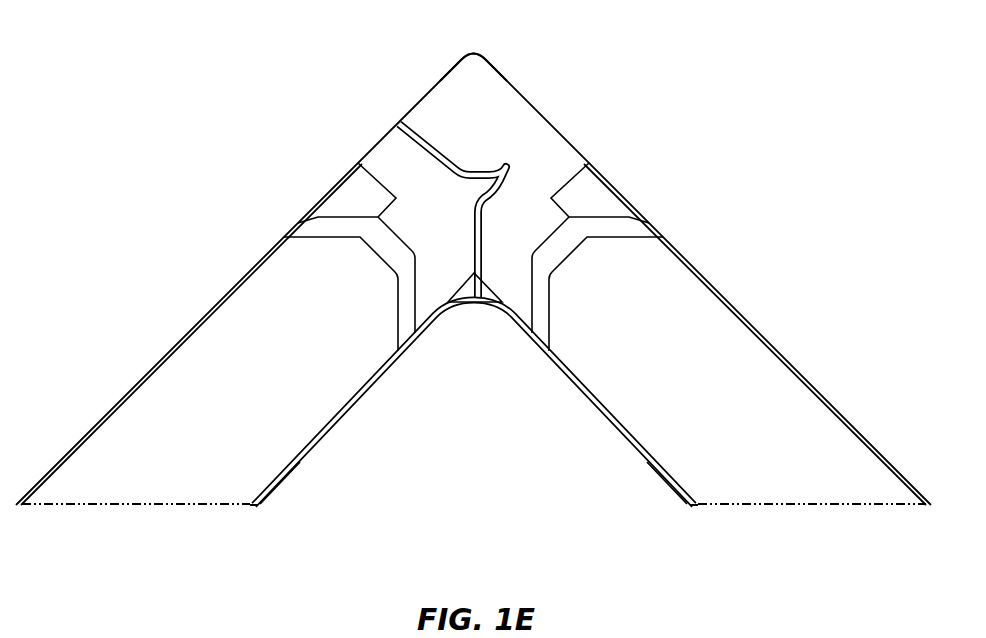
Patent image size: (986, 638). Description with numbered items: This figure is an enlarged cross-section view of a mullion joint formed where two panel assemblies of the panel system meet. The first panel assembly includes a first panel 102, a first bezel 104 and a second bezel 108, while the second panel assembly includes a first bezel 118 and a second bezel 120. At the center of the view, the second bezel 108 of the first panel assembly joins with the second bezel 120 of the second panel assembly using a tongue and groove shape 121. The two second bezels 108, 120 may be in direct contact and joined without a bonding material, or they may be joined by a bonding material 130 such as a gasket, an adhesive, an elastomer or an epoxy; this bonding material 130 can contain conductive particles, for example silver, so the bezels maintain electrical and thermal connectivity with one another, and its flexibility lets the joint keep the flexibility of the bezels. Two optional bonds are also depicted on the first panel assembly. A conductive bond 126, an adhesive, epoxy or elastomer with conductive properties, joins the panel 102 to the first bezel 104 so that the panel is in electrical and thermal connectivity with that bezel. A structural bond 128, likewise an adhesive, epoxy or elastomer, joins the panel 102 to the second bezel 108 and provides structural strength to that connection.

The first panel 102 is at (213, 352).
The first bezel 104 is at (350, 194).
The second bezel 108 is at (390, 153).
The first bezel 118 is at (607, 172).
The second bezel 120 is at (490, 97).
The tongue and groove shape 121 is at (510, 160).
The conductive bond 126 is at (307, 227).
The structural bond 128 is at (407, 328).
The bonding material 130 is at (506, 159).